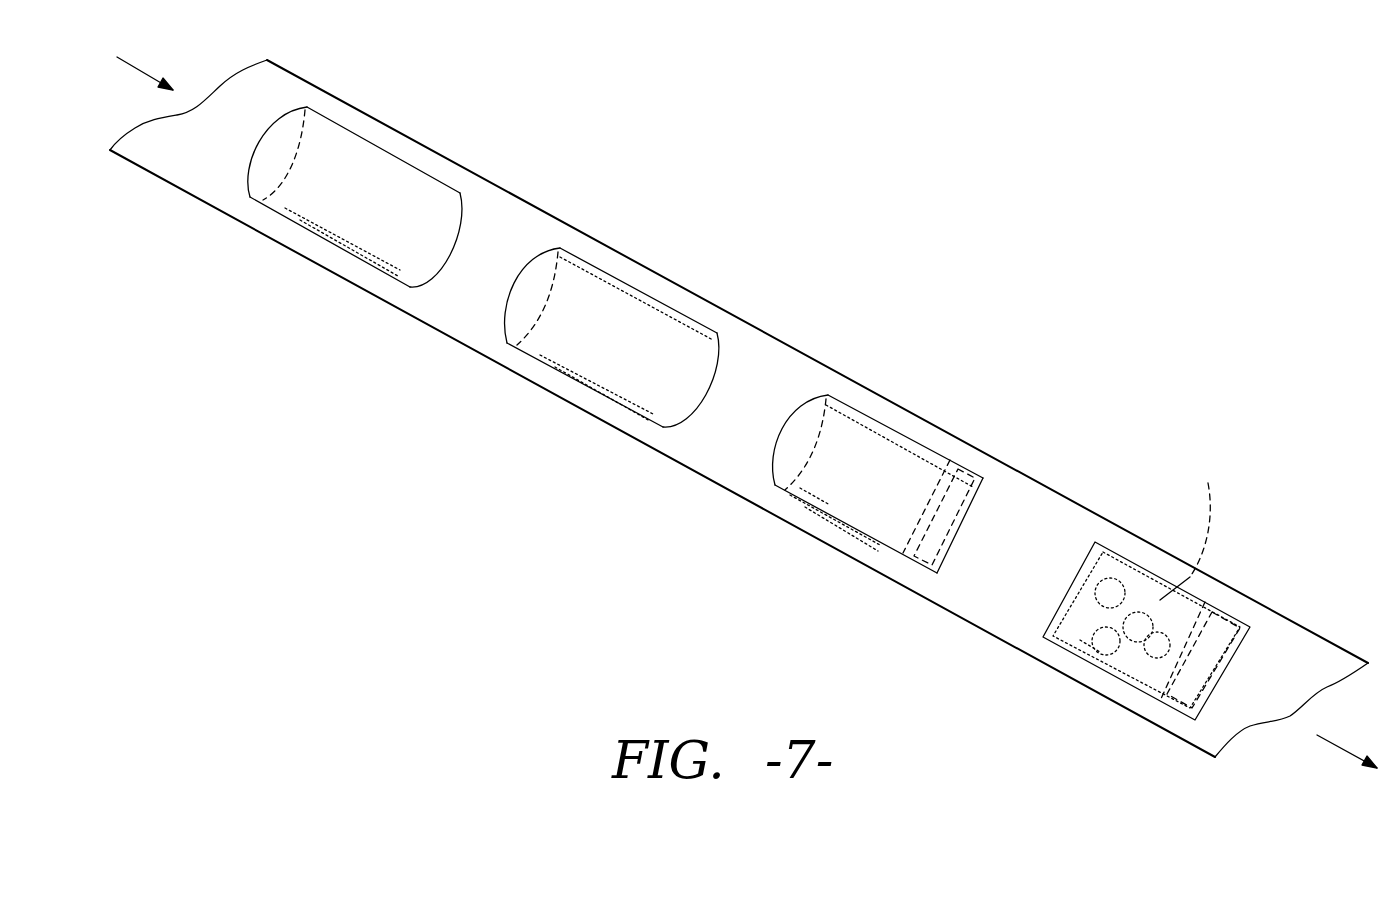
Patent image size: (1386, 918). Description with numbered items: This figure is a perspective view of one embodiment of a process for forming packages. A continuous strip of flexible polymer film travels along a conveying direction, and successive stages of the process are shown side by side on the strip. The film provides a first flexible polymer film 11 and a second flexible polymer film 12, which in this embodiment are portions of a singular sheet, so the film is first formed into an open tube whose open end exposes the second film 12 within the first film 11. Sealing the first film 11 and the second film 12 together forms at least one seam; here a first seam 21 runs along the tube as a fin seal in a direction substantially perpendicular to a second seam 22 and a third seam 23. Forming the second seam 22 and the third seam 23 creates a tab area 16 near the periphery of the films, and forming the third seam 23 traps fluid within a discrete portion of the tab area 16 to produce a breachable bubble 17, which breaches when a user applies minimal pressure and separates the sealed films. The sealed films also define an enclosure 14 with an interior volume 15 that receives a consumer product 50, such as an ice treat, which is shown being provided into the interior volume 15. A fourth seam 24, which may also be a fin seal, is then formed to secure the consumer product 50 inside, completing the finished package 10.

The package 10 is at (860, 403).
The first flexible polymer film 11 is at (407, 180).
The second flexible polymer film 12 is at (420, 273).
The enclosure 14 is at (833, 520).
The interior volume 15 is at (820, 490).
The tab area 16 is at (907, 562).
The breachable bubble 17 is at (925, 537).
The first seam 21 is at (627, 283).
The second seam 22 is at (967, 507).
The third seam 23 is at (940, 472).
The fourth seam 24 is at (1060, 618).
The consumer product 50 is at (1190, 524).